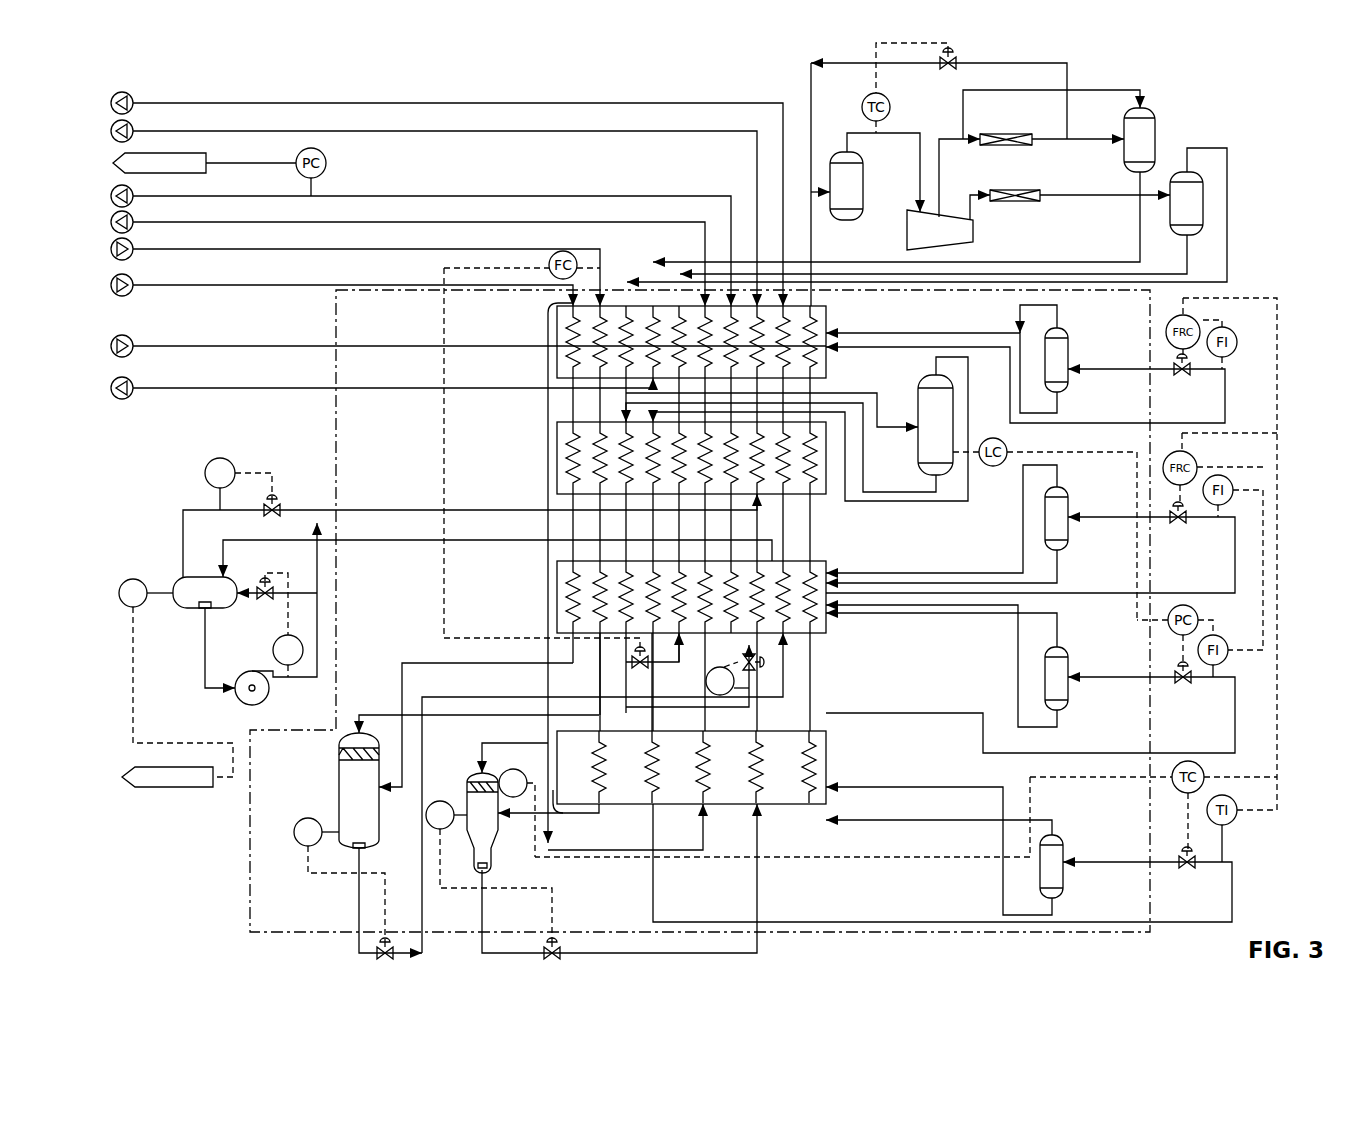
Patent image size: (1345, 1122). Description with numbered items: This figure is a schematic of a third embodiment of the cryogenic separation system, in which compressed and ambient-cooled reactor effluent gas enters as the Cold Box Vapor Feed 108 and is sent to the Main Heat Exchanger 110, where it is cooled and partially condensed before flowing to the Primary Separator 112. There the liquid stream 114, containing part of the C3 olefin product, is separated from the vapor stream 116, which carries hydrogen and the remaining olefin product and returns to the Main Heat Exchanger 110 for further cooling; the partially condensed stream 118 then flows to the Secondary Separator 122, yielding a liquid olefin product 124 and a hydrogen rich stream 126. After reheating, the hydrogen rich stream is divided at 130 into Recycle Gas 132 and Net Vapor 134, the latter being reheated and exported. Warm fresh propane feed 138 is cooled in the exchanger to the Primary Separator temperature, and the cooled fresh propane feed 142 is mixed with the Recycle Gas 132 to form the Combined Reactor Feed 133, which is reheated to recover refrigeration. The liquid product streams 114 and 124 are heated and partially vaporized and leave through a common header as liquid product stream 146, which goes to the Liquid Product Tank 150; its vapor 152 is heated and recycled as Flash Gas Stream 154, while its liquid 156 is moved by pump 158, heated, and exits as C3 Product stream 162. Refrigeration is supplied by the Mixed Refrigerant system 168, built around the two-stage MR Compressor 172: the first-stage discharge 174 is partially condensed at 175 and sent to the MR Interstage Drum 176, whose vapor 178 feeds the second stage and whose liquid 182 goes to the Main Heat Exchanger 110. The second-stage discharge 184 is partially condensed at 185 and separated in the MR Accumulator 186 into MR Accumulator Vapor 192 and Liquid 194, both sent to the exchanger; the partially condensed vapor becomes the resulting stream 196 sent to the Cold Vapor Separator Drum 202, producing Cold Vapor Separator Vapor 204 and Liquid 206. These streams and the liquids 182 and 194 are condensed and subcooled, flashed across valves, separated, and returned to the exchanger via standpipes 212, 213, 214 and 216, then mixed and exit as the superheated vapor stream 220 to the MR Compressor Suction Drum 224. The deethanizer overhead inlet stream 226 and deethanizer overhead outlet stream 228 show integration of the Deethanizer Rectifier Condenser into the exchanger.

The Cold Box Vapor Feed 108 is at (216, 285).
The Main Heat Exchanger 110 is at (545, 555).
The Primary Separator 112 is at (338, 786).
The liquid stream 114 is at (357, 893).
The vapor stream 116 is at (387, 713).
The partially condensed stream 118 is at (583, 817).
The Secondary Separator 122 is at (456, 800).
The liquid olefin product 124 is at (483, 903).
The hydrogen rich stream 126 is at (505, 742).
The division point 130 is at (703, 707).
The Recycle Gas 132 is at (695, 665).
The Combined Reactor Feed 133 is at (216, 196).
The Net Vapor 134 is at (705, 712).
The warm fresh propane feed 138 is at (216, 222).
The cooled fresh propane feed 142 is at (600, 645).
The liquid product stream 146 is at (772, 548).
The Liquid Product Tank 150 is at (183, 613).
The vapor 152 is at (188, 505).
The Flash Gas Stream 154 is at (216, 131).
The liquid 156 is at (208, 642).
The pump 158 is at (240, 702).
The C3 Product stream 162 is at (183, 103).
The Mixed Refrigerant system 168 is at (1236, 80).
The two-stage MR Compressor 172 is at (905, 238).
The discharge of the first MR Compressor Stage 174 is at (953, 137).
The partial condenser 175 is at (998, 131).
The MR Interstage Drum 176 is at (1155, 128).
The vapor 178 is at (1097, 83).
The liquid 182 is at (1140, 203).
The second MR Compressor Stage Discharge 184 is at (982, 200).
The partial condenser 185 is at (1030, 190).
The MR Accumulator 186 is at (1140, 237).
The MR Accumulator Vapor 192 is at (1212, 200).
The MR Accumulator Liquid 194 is at (1228, 262).
The resulting stream 196 is at (833, 393).
The Cold Vapor Separator Drum 202 is at (917, 437).
The Cold Vapor Separator Vapor 204 is at (945, 357).
The Cold Vapor Separator Liquid 206 is at (928, 495).
The standpipe 212 is at (1070, 348).
The standpipe 213 is at (1068, 502).
The standpipe 214 is at (1068, 662).
The standpipe 216 is at (1063, 852).
The superheated vapor stream 220 is at (806, 212).
The MR Compressor Suction Drum 224 is at (840, 180).
The deethanizer overhead inlet stream 226 is at (372, 346).
The deethanizer overhead outlet stream 228 is at (352, 388).